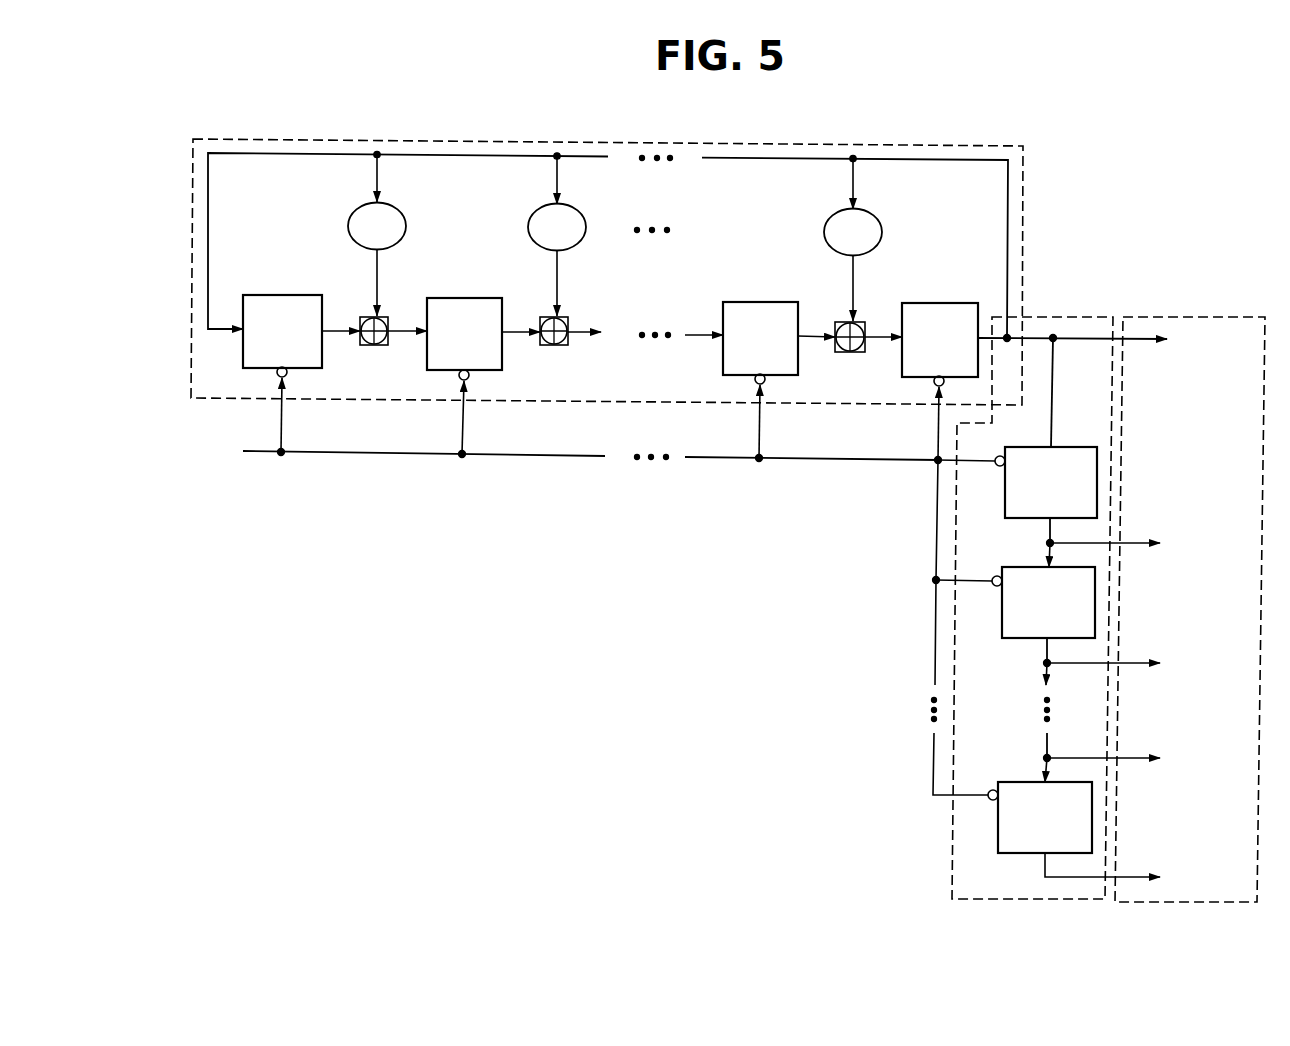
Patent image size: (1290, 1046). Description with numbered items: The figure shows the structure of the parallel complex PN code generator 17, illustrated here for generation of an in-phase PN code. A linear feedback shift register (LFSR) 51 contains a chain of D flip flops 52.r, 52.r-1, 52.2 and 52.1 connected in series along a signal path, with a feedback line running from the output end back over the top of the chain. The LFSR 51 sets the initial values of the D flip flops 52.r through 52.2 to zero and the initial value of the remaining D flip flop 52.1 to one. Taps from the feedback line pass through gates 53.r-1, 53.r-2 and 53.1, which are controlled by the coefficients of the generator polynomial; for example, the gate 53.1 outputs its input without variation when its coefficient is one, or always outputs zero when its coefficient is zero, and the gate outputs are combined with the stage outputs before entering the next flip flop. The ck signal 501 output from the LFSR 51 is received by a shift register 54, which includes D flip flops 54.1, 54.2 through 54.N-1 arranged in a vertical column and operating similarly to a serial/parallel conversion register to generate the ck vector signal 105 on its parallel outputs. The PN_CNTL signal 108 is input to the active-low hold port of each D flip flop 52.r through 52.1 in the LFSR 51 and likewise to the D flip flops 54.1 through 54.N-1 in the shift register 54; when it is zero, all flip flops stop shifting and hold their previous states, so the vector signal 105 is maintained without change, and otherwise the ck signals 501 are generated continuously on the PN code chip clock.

The parallel complex PN code generator 17 is at (1104, 133).
The linear feedback shift register (LFSR) 51 is at (1023, 195).
The D flip flop 52.r is at (285, 294).
The D flip flop 52.r-1 is at (465, 297).
The D flip flop 52.2 is at (758, 301).
The D flip flop 52.1 is at (941, 302).
The gate 53.r-1 is at (348, 225).
The gate 53.r-2 is at (528, 227).
The gate 53.1 is at (824, 232).
The shift register 54 is at (1063, 313).
The D flip flop 54.1 is at (1022, 519).
The D flip flop 54.2 is at (1022, 640).
The D flip flop 54.N-1 is at (1017, 780).
The ck vector signal 105 is at (1252, 315).
The PN_CNTL signal 108 is at (343, 453).
The ck signal 501 is at (1138, 346).